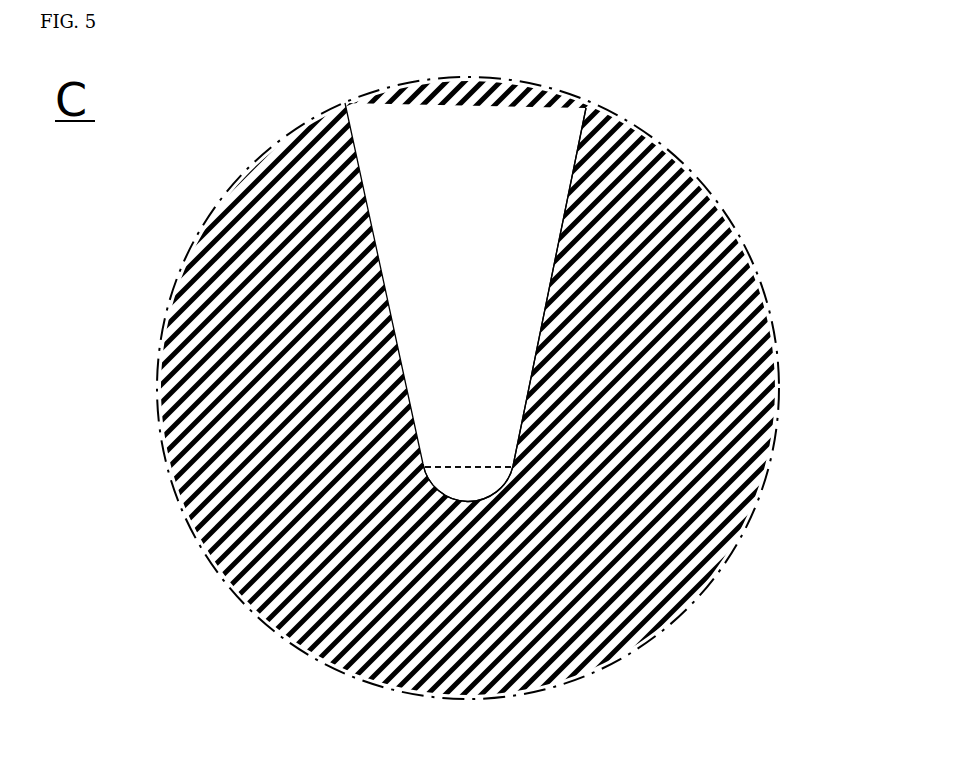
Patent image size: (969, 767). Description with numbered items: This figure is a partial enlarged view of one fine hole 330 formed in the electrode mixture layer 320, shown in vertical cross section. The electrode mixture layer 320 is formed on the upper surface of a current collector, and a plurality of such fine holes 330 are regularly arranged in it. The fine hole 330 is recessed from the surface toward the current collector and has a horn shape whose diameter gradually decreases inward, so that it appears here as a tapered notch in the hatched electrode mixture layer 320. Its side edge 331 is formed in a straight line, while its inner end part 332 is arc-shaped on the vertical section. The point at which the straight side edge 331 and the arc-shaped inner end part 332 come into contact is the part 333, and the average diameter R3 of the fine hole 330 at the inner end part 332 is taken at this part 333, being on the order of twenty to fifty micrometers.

The electrode mixture layer 320 is at (247, 257).
The fine hole 330 is at (552, 132).
The side edge 331 is at (563, 228).
The inner end part 332 is at (470, 501).
The contact part 333 is at (512, 467).
The average diameter at inner end part R3 is at (455, 465).